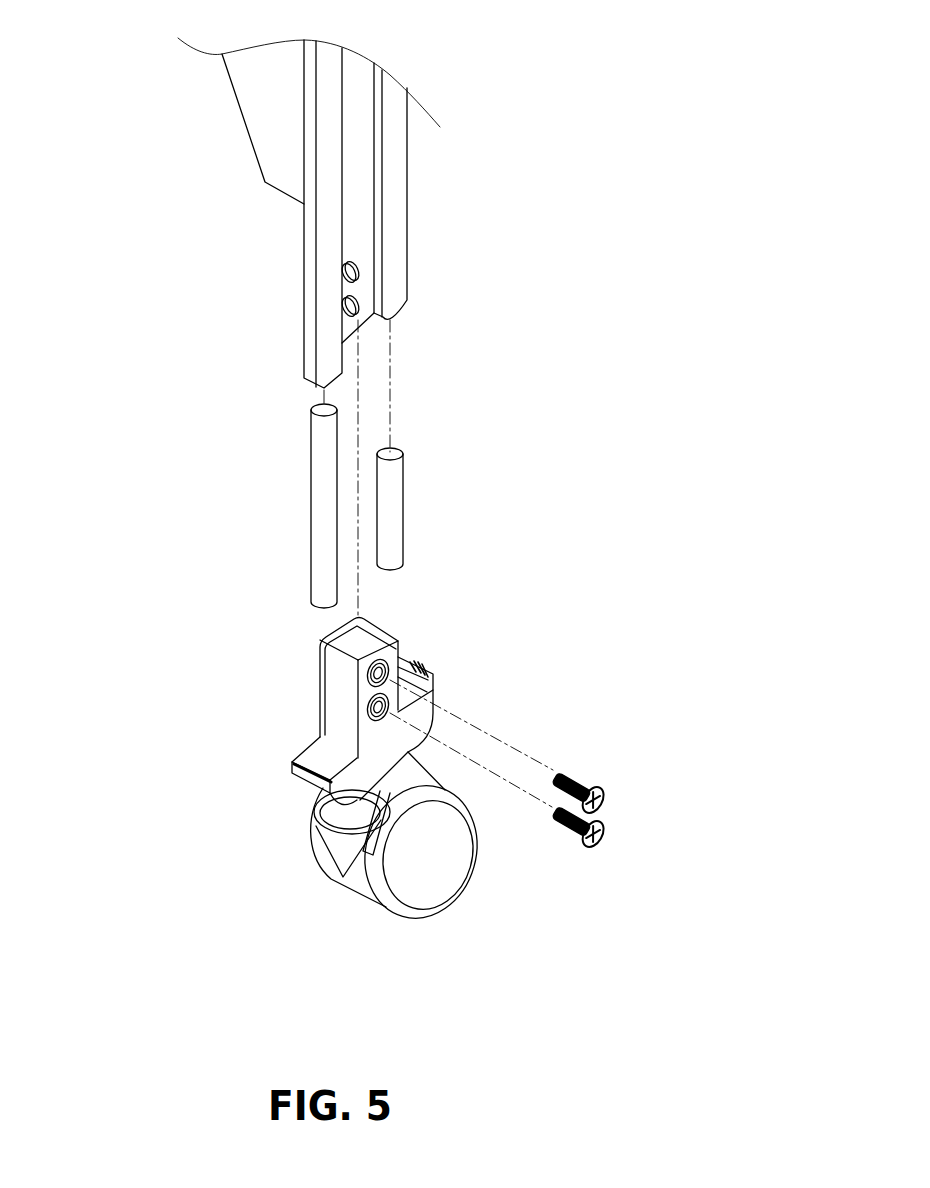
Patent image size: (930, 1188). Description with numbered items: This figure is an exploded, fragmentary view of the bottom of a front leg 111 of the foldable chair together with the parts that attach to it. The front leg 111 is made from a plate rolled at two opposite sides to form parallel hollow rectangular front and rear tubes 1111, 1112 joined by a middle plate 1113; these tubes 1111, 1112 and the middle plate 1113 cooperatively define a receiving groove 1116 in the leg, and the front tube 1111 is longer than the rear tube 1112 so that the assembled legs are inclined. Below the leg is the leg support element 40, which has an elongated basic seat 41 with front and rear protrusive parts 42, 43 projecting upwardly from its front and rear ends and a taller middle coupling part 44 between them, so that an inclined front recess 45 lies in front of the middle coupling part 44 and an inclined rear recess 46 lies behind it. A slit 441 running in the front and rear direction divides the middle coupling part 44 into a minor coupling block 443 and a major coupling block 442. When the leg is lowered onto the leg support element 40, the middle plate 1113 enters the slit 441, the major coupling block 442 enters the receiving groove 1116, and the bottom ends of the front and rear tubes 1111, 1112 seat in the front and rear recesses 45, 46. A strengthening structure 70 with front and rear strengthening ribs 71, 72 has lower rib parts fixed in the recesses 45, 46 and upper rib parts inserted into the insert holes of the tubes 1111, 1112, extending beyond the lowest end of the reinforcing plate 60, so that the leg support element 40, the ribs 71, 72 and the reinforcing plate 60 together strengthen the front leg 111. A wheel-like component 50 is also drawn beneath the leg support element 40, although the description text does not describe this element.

The front leg 111 is at (466, 327).
The front tube 1111 is at (323, 245).
The rear tube 1112 is at (392, 287).
The middle plate 1113 is at (360, 157).
The receiving groove 1116 is at (365, 202).
The reinforcing plate 60 is at (255, 118).
The strengthening structure 70 is at (321, 487).
The front strengthening rib 71 is at (325, 532).
The rear strengthening rib 72 is at (400, 520).
The leg support element 40 is at (381, 699).
The middle coupling part 44 is at (260, 688).
The slit 441 is at (323, 655).
The minor coupling block 443 is at (323, 683).
The major coupling block 442 is at (323, 712).
The inclined front recess 45 is at (293, 767).
The rear protrusive part 43 is at (430, 667).
The inclined rear recess 46 is at (415, 667).
The basic seat 41 is at (313, 817).
The front protrusive part 42 is at (295, 790).
The wheel 50 is at (440, 885).